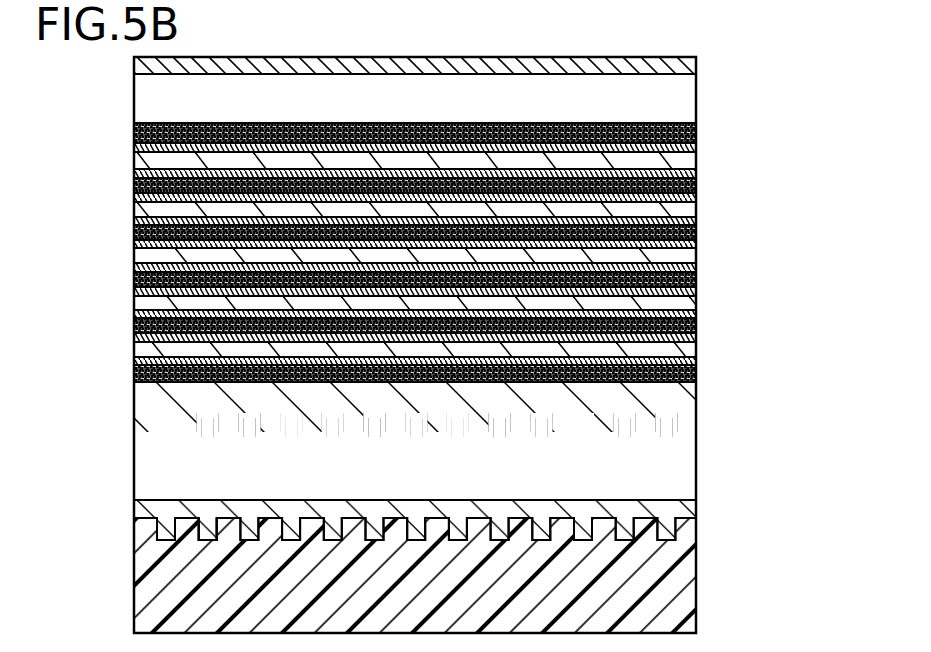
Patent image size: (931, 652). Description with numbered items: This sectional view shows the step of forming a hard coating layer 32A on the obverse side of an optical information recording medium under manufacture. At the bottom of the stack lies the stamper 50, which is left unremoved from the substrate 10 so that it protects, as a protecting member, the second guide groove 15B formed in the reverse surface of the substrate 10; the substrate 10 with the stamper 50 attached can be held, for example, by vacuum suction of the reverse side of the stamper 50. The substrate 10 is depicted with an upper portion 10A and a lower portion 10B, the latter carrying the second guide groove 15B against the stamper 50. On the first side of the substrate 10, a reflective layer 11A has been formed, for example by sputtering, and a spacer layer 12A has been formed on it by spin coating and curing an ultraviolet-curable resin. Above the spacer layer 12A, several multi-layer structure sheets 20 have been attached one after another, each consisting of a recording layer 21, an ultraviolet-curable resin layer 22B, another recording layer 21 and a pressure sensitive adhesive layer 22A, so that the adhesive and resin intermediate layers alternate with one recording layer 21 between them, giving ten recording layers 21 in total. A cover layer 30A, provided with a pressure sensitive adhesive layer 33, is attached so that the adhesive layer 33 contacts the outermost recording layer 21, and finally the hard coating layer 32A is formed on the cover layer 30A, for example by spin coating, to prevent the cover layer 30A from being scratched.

The hard coating layer 32A is at (690, 65).
The cover layer 30A is at (685, 97).
The pressure sensitive adhesive layer 33 is at (686, 136).
The multi-layer structure sheet 20 is at (491, 265).
The recording layer 21 is at (698, 291).
The ultraviolet-curable resin layer 22B is at (690, 303).
The pressure sensitive adhesive layer 22A is at (698, 326).
The spacer layer 12A is at (685, 393).
The reflective layer 11A is at (696, 434).
The substrate 10 is at (483, 488).
The substrate upper layer 10A is at (685, 478).
The substrate lower layer 10B is at (685, 509).
The second guide groove 15B is at (203, 527).
The stamper 50 is at (692, 568).